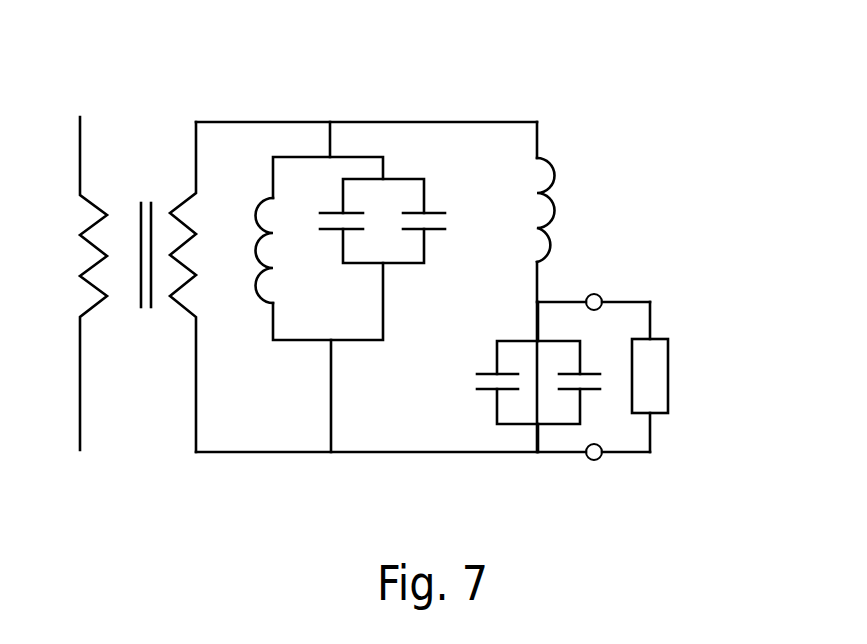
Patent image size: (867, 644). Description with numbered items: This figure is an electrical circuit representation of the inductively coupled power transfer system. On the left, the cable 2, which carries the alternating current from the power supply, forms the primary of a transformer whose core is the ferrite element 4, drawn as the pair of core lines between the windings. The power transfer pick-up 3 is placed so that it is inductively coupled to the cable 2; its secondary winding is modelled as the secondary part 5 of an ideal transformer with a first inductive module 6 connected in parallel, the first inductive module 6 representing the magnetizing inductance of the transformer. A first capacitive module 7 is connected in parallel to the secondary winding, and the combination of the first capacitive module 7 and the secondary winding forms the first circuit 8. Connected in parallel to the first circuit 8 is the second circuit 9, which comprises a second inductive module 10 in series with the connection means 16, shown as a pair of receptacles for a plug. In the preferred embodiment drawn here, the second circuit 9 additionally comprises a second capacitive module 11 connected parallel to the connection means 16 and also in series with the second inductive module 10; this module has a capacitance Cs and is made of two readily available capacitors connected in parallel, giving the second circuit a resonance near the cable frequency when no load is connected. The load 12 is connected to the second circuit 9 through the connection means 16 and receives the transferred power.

The cable 2 is at (80, 413).
The power transfer pick-up 3 is at (260, 453).
The ferrite element 4 is at (143, 202).
The secondary part of the ideal transformer 5 is at (188, 198).
The first inductive module 6 is at (259, 203).
The first capacitive module 7 is at (402, 178).
The first circuit 8 is at (352, 343).
The second circuit 9 is at (563, 267).
The second inductive module 10 is at (557, 175).
The second capacitive module 11 is at (548, 426).
The load 12 is at (668, 372).
The connection means 16 is at (597, 294).